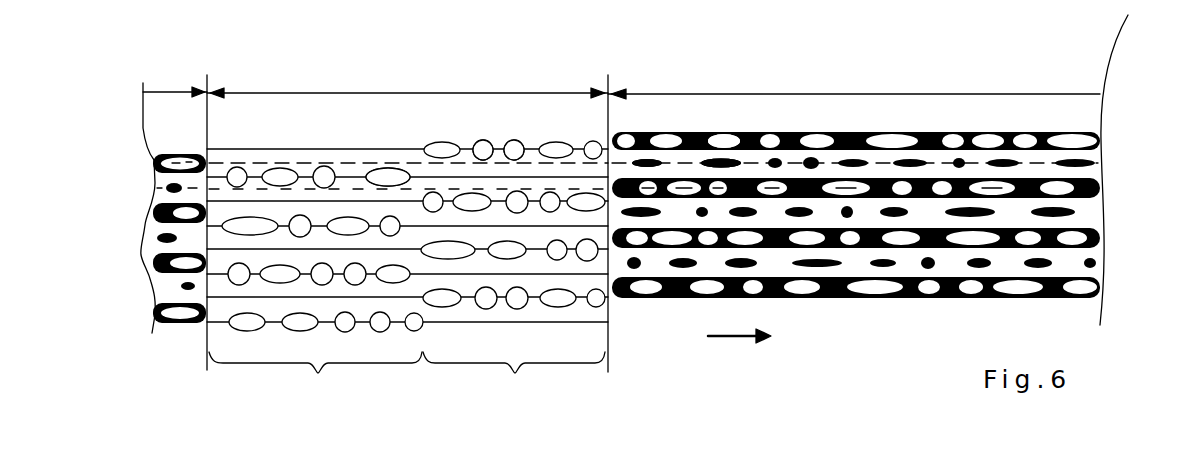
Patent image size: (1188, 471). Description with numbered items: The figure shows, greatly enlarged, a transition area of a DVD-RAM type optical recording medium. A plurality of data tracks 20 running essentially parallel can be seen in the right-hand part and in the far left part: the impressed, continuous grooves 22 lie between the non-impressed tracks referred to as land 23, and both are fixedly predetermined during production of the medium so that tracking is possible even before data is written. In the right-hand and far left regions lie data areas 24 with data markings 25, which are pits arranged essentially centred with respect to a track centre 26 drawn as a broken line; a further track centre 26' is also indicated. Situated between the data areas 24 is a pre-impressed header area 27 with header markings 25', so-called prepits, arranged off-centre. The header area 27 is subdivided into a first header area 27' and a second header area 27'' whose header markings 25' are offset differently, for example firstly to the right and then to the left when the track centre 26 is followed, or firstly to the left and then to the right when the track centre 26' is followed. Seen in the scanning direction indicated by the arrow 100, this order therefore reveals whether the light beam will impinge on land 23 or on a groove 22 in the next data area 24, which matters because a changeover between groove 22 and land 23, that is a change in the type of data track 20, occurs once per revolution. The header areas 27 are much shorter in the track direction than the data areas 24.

The data track 20 is at (985, 122).
The groove 22 is at (153, 163).
The land 23 is at (165, 188).
The data area 24 is at (621, 74).
The data marking 25 is at (751, 101).
The header marking 25' is at (448, 145).
The track centre 26 is at (686, 95).
The track centre 26' is at (412, 99).
The header area 27 is at (407, 188).
The first header area 27' is at (316, 290).
The second header area 27'' is at (513, 277).
The arrow indicating scanning direction 100 is at (723, 345).